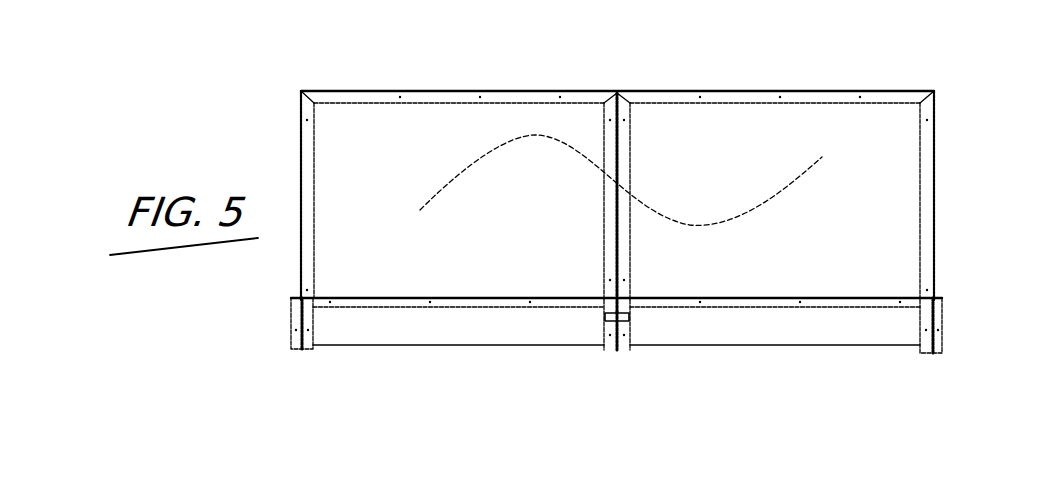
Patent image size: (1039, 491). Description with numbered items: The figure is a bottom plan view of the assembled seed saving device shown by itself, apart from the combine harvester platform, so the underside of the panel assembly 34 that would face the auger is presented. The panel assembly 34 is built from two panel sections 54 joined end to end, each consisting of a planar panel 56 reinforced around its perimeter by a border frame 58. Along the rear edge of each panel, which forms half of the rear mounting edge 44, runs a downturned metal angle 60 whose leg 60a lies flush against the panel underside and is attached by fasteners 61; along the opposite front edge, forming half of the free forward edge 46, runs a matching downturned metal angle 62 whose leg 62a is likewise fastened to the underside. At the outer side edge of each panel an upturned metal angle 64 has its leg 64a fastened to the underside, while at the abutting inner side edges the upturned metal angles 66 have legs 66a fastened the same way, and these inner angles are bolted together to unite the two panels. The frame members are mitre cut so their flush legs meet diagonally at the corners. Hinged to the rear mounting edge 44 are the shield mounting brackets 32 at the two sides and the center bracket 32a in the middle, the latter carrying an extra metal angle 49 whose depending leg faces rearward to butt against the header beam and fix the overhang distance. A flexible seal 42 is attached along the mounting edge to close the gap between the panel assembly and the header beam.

The shield mounting bracket 32 is at (298, 352).
The center bracket 32a is at (615, 352).
The panel assembly 34 is at (677, 217).
The flexible seal 42 is at (686, 340).
The rear mounting edge 44 is at (404, 312).
The free forward edge 46 is at (690, 88).
The extra metal angle 49 is at (636, 322).
The panel section 54 is at (826, 118).
The planar panel 56 is at (418, 125).
The border frame 58 is at (938, 118).
The downturned metal angle 60 is at (517, 312).
The leg of rear downturned angle 60a is at (570, 308).
The fastener 61 is at (335, 95).
The downturned metal angle 62 is at (510, 97).
The leg of front downturned angle 62a is at (583, 95).
The upturned metal angle 64 is at (304, 254).
The leg of outer upturned angle 64a is at (312, 158).
The upturned metal angle 66 is at (612, 200).
The leg of inner upturned angle 66a is at (607, 238).